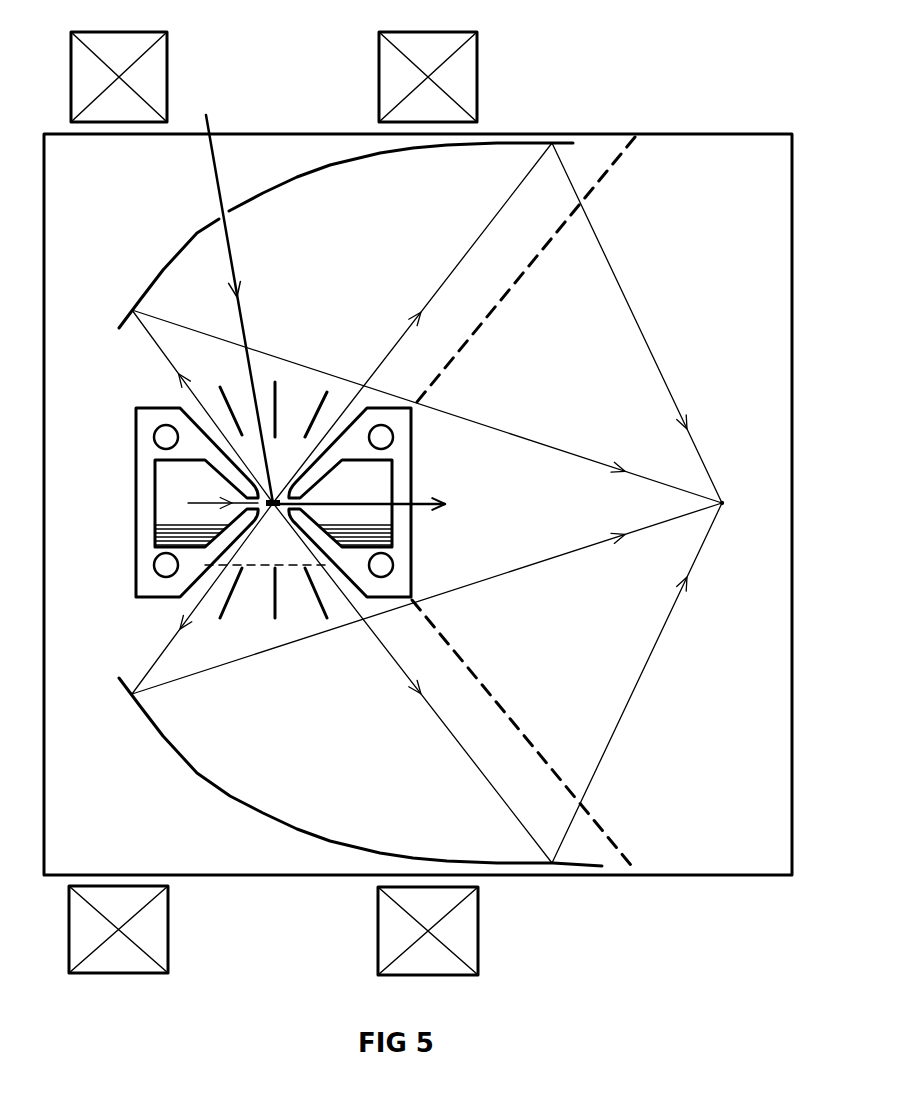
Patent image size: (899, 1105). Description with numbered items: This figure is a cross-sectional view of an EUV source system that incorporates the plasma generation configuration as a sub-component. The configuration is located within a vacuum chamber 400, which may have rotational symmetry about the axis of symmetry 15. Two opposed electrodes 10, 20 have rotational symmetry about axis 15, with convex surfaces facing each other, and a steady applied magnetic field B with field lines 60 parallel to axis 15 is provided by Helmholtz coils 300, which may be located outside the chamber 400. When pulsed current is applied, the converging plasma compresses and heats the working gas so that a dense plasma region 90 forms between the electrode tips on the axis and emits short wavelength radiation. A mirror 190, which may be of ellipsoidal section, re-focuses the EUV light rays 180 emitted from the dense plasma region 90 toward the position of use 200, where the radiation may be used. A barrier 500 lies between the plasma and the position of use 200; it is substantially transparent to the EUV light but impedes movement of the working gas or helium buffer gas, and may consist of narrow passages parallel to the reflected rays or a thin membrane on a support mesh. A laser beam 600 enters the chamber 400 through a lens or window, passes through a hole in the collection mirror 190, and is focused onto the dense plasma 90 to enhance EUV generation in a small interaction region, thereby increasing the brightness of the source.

The electrode 10 is at (148, 602).
The axis of symmetry 15 is at (418, 497).
The electrode 20 is at (380, 602).
The magnetic field lines 60 is at (198, 500).
The dense gas cylinder 90 is at (275, 512).
The applied magnetic field B is at (223, 495).
The EUV light rays 180 is at (458, 248).
The mirror 190 is at (289, 190).
The position of use 200 is at (749, 505).
The Helmholtz coils 300 is at (180, 60).
The vacuum chamber 400 is at (783, 215).
The barrier 500 is at (525, 272).
The laser beam 600 is at (212, 197).